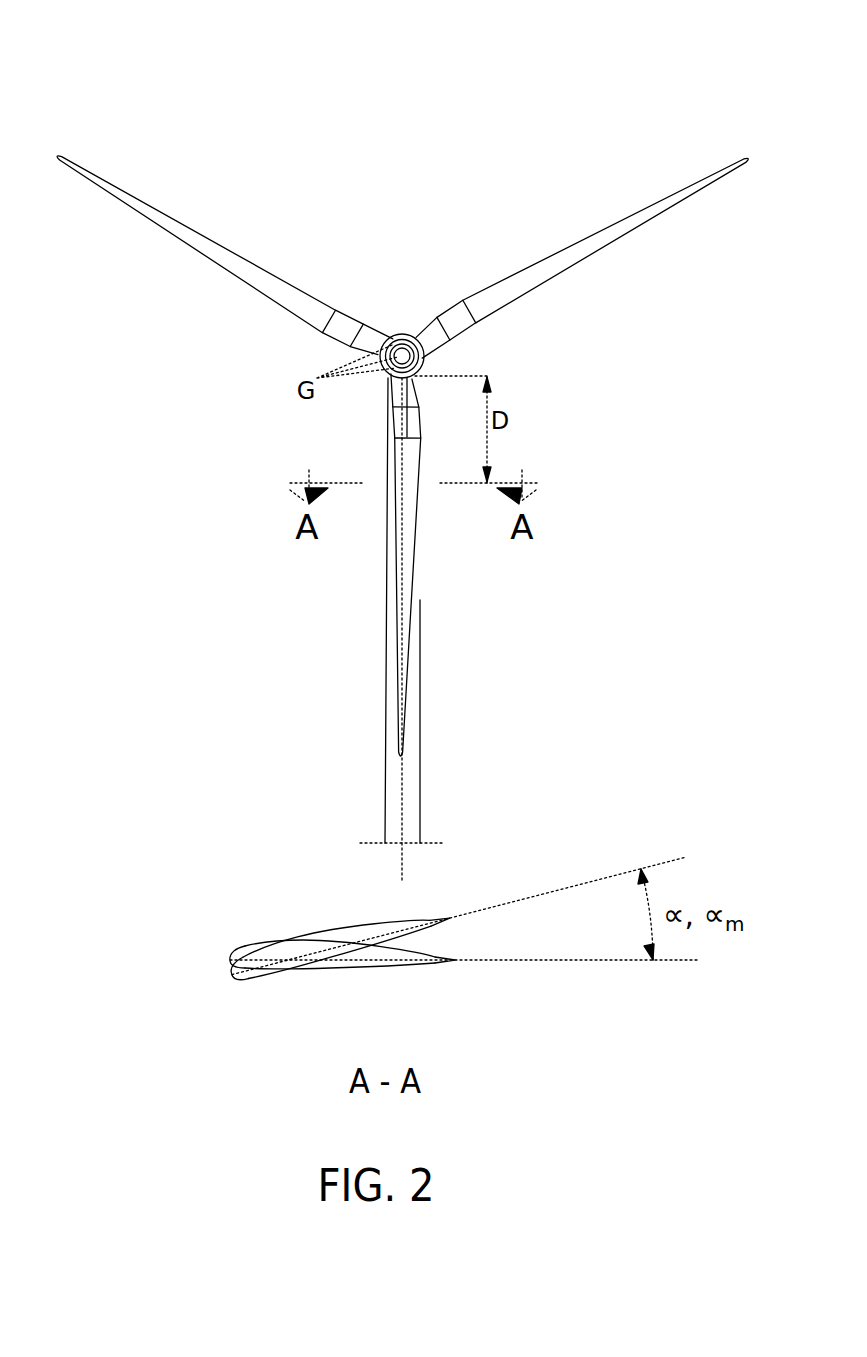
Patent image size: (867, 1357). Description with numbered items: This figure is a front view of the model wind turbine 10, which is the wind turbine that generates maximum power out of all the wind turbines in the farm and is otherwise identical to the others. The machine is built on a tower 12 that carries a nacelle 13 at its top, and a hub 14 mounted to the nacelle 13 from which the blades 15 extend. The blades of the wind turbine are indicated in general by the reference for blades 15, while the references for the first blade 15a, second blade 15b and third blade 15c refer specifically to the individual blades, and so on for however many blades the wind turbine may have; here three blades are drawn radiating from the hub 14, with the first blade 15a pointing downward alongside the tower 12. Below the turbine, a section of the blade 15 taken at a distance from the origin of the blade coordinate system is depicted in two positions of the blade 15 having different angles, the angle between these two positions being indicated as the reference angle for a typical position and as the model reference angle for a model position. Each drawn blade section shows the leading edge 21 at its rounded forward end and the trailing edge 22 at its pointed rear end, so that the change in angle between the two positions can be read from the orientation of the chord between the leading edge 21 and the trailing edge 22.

The model wind turbine 10 is at (210, 611).
The tower 12 is at (415, 784).
The nacelle 13 is at (390, 333).
The hub 14 is at (425, 357).
The blades 15 is at (401, 526).
The first blade 15a is at (422, 527).
The second blade 15b is at (607, 233).
The third blade 15c is at (210, 250).
The leading edge 21 is at (224, 968).
The trailing edge 22 is at (456, 958).